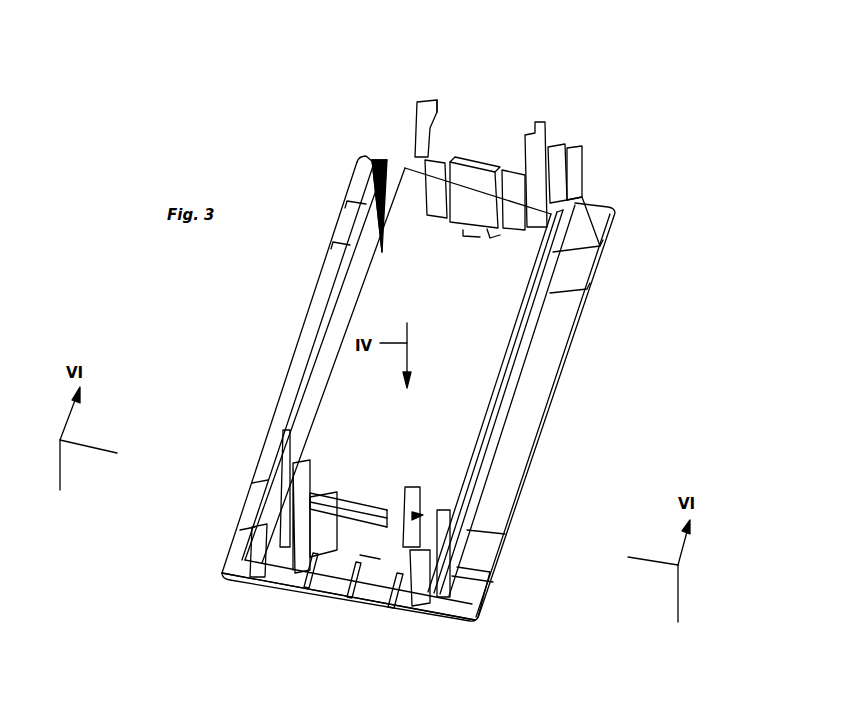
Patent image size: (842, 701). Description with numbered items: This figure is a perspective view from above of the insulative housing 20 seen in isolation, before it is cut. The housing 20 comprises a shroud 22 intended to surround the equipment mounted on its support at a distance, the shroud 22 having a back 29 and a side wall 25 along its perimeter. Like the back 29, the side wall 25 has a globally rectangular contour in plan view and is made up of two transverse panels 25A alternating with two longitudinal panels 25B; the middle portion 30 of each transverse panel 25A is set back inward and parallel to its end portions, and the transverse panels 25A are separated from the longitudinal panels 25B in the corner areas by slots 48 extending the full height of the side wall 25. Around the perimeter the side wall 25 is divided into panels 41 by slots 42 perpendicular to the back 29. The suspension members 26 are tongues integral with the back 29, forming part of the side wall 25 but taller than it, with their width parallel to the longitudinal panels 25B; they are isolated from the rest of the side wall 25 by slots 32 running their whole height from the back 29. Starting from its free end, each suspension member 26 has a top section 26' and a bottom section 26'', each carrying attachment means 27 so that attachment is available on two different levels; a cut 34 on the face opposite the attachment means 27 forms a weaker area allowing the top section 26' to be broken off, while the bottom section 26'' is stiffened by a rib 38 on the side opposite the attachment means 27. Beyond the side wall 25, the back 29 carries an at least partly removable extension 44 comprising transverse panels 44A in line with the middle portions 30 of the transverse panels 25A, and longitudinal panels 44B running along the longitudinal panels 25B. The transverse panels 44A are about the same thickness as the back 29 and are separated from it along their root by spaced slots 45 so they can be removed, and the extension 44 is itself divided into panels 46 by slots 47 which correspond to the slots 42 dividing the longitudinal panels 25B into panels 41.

The insulative housing 20 is at (567, 360).
The shroud 22 is at (580, 183).
The side wall 25 is at (733, 697).
The transverse panels 25A is at (460, 205).
The longitudinal panels 25B is at (324, 314).
The suspension members 26 is at (389, 287).
The top section 26' is at (429, 114).
The bottom section 26'' is at (427, 211).
The attachment means 27 is at (430, 148).
The back 29 is at (406, 409).
The middle portion 30 is at (456, 160).
The slots 32 is at (537, 217).
The cut 34 is at (422, 167).
The rib 38 is at (365, 160).
The panels 41 is at (467, 493).
The slots 42 is at (458, 515).
The extension 44 is at (473, 623).
The transverse panels 44A is at (352, 595).
The longitudinal panels 44B is at (580, 325).
The slots 45 is at (330, 555).
The panels 46 is at (480, 595).
The slots 47 is at (587, 293).
The slots 48 is at (575, 148).